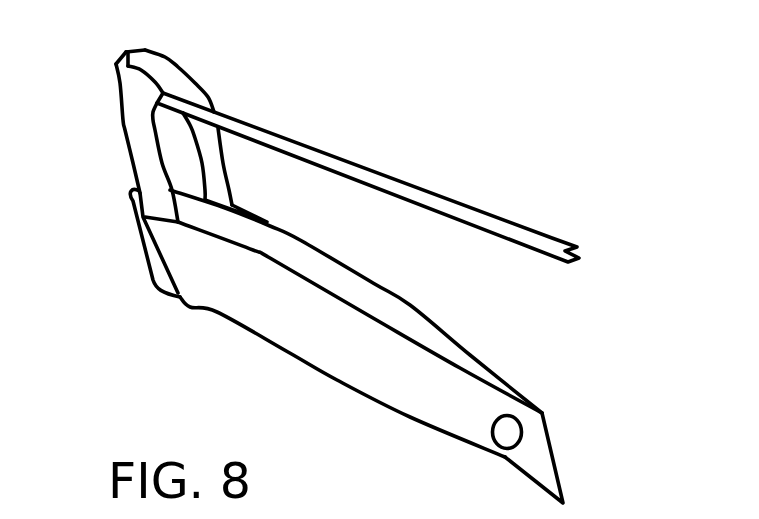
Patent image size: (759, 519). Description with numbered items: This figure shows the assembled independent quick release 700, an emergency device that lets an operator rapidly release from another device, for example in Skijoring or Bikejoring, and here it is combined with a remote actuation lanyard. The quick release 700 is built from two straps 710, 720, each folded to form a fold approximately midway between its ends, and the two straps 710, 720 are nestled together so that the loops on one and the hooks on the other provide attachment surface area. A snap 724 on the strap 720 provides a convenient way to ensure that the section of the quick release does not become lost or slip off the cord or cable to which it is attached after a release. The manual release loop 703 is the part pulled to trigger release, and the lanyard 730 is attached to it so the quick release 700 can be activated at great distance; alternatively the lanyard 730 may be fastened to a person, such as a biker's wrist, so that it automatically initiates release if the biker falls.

The independent quick release 700 is at (421, 139).
The manual release loop 703 is at (180, 75).
The strap 710 is at (289, 352).
The strap 720 is at (141, 248).
The snap 724 is at (513, 432).
The lanyard 730 is at (552, 240).